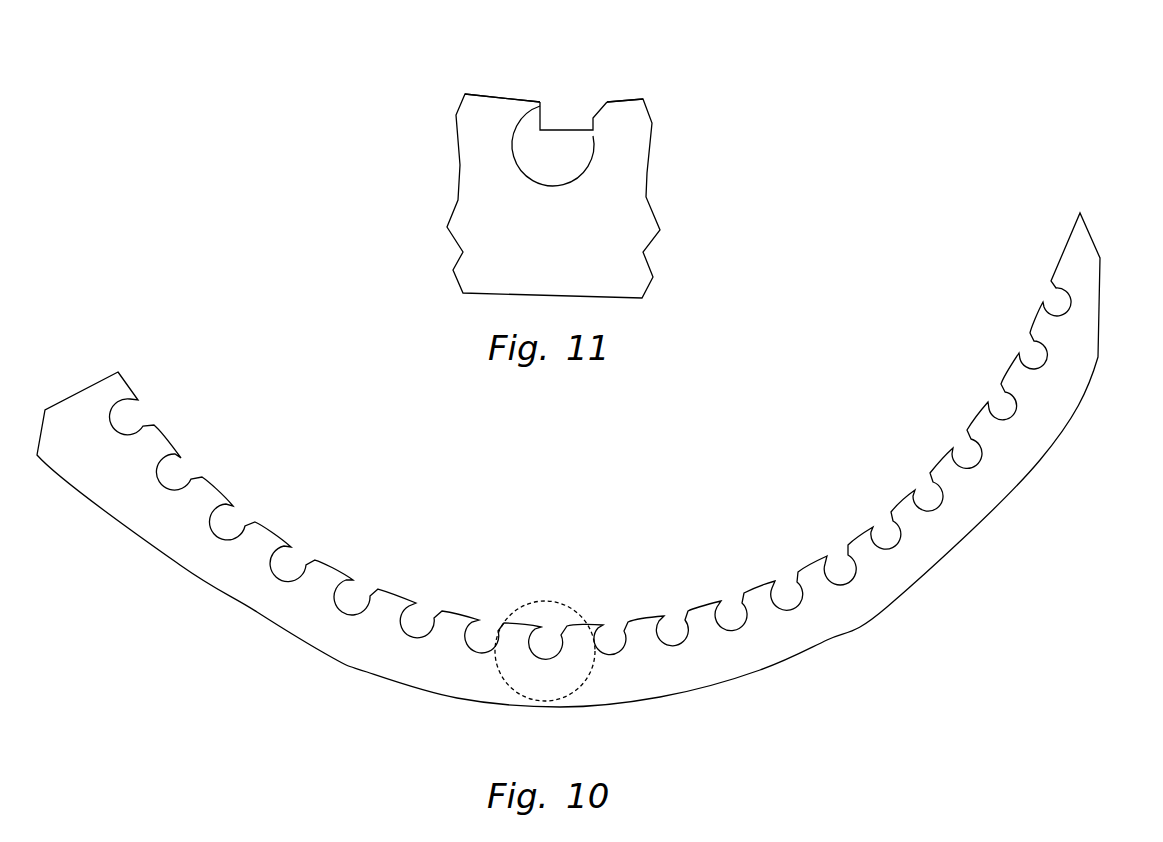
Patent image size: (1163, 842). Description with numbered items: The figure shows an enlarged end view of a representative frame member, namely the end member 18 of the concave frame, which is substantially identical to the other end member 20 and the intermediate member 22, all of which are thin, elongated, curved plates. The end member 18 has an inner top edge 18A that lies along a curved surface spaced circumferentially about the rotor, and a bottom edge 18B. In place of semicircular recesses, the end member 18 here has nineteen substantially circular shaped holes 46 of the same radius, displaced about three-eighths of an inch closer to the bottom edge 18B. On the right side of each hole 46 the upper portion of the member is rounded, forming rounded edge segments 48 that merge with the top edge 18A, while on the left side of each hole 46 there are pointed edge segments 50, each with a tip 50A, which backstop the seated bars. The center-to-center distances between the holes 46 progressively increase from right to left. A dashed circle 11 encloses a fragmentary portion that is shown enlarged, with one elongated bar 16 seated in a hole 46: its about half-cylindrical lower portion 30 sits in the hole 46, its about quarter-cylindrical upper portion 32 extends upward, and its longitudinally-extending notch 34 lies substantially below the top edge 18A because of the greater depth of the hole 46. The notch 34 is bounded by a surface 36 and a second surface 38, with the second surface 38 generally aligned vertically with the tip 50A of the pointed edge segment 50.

In FIG. 10, the dashed circle 11 is at (565, 727).
In FIG. 11, the elongated bar 16 is at (621, 242).
In FIG. 11, the end member 18 is at (580, 196).
In FIG. 10, the end member 18 is at (568, 460).
In FIG. 11, the inner top edge 18A is at (662, 51).
In FIG. 10, the inner top edge 18A is at (405, 600).
In FIG. 10, the bottom edge 18B is at (367, 672).
In FIG. 10, the end member 20 is at (568, 460).
In FIG. 10, the intermediate member 22 is at (905, 601).
In FIG. 11, the lower portion 30 is at (575, 145).
In FIG. 11, the upper portion 32 is at (528, 118).
In FIG. 11, the longitudinally-extending notch 34 is at (622, 77).
In FIG. 11, the slot side wall 36 is at (622, 77).
In FIG. 11, the second surface 38 is at (557, 131).
In FIG. 11, the circular shaped hole 46 is at (530, 152).
In FIG. 10, the circular shaped hole 46 is at (353, 612).
In FIG. 11, the rounded edge segment 48 is at (641, 98).
In FIG. 10, the rounded edge segment 48 is at (371, 590).
In FIG. 11, the pointed edge segment 50 is at (499, 58).
In FIG. 10, the pointed edge segment 50 is at (233, 504).
In FIG. 11, the tip 50A is at (540, 102).